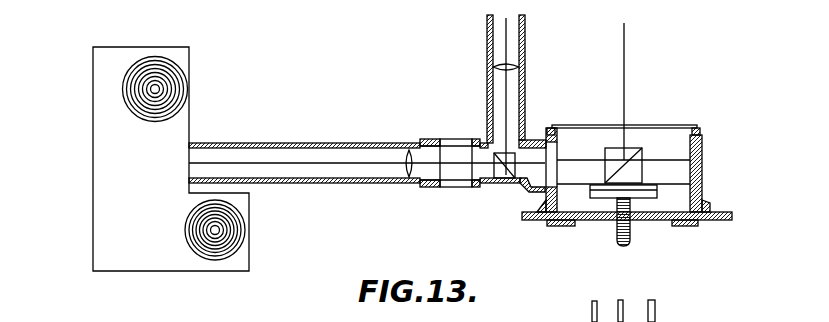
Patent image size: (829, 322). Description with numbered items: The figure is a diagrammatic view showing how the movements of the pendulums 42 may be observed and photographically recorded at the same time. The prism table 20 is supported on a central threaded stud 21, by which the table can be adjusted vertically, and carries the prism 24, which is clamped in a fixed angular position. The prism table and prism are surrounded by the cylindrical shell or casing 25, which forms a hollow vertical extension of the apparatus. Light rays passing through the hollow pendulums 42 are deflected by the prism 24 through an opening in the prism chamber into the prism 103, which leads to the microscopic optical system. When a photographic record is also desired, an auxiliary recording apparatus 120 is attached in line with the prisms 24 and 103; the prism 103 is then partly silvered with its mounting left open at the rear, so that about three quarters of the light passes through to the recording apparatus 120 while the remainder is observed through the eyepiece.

The auxiliary recording apparatus 120 is at (93, 176).
The prism 103 is at (500, 181).
The cylindrical shell or casing 25 is at (703, 143).
The prism 24 is at (703, 157).
The prism table 20 is at (703, 183).
The central threaded stud 21 is at (632, 235).
The pendulums 42 is at (656, 320).